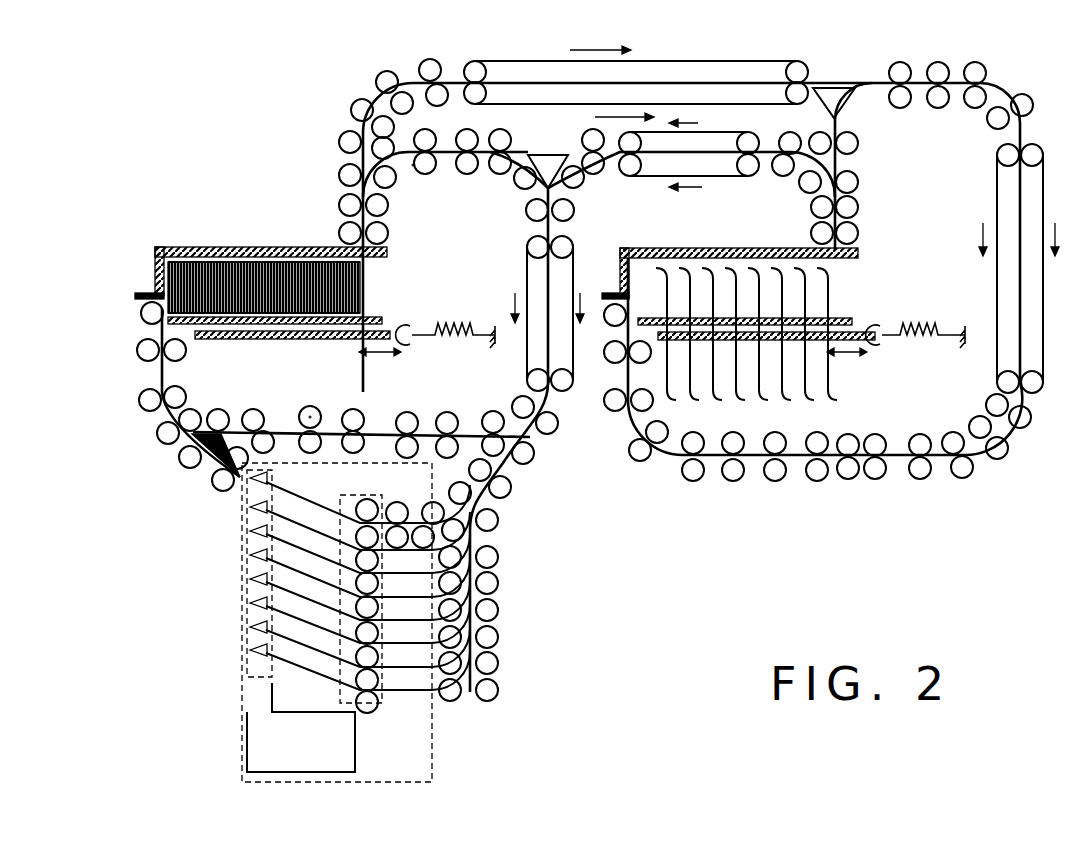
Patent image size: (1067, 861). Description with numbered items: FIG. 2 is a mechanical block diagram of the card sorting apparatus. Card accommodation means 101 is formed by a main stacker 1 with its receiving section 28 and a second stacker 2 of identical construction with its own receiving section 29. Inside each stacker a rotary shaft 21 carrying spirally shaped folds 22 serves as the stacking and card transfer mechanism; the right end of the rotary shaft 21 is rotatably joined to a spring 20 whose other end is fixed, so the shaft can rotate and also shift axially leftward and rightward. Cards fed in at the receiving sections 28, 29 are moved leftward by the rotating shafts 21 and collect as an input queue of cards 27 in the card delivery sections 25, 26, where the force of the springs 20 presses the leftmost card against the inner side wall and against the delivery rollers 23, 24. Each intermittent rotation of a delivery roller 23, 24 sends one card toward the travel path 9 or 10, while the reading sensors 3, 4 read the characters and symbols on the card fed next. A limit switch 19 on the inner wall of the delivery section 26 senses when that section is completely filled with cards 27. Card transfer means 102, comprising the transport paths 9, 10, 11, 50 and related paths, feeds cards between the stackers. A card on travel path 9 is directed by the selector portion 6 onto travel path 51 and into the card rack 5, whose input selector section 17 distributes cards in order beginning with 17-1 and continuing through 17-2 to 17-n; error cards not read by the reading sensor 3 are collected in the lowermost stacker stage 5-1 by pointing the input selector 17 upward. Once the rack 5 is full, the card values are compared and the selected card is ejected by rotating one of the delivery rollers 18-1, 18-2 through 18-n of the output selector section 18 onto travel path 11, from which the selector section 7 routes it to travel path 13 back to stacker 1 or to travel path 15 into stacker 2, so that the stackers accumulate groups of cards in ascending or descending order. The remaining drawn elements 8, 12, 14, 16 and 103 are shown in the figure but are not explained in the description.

The stacker 1 is at (532, 339).
The stacker 2 is at (732, 298).
The reading sensor 3 is at (136, 296).
The reading sensor 4 is at (608, 300).
The card rack 5 is at (333, 641).
The lowermost stacker stage 5-1 is at (275, 764).
The selector portion 6 is at (200, 458).
The selector section 7 is at (553, 168).
The diverter gate 8 is at (831, 95).
The travel path 9 is at (158, 374).
The travel path 10 is at (665, 458).
The travel path 11 is at (518, 468).
The return conveyor 12 is at (993, 462).
The travel path 13 is at (398, 165).
The descending conveyor path 14 is at (856, 163).
The travel path 15 is at (608, 178).
The upper conveyor belt 16 is at (450, 82).
The input selector portion 17 is at (260, 590).
The input selector element 17-1 is at (268, 480).
The second inlet gate 17-2 is at (268, 507).
The n-th inlet gate 17-n is at (301, 699).
The output selector portion 18 is at (368, 620).
The delivery roller 18-1 is at (394, 496).
The delivery roller 18-2 is at (360, 540).
The delivery roller 18-n is at (383, 702).
The limit switch 19 is at (620, 255).
The spring 20 is at (458, 342).
The rotary shaft 21 is at (382, 350).
The spirally shaped folds 22 is at (370, 326).
The delivery roller 23 is at (148, 324).
The delivery roller 24 is at (616, 352).
The card delivery section 25 is at (154, 272).
The card delivery section 26 is at (624, 282).
The cards 27 is at (200, 266).
The receiving section 28 is at (388, 258).
The receiving section 29 is at (848, 258).
The transport path 50 is at (276, 430).
The travel path 51 is at (216, 466).
The card accommodation means 101 is at (146, 234).
The card transfer means 102 is at (158, 463).
The third station 103 is at (512, 625).